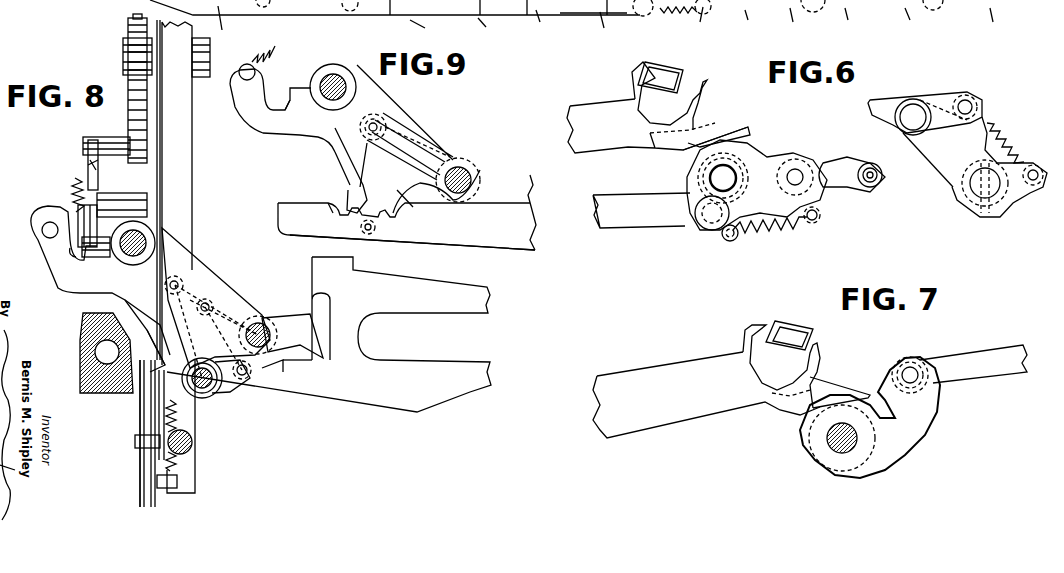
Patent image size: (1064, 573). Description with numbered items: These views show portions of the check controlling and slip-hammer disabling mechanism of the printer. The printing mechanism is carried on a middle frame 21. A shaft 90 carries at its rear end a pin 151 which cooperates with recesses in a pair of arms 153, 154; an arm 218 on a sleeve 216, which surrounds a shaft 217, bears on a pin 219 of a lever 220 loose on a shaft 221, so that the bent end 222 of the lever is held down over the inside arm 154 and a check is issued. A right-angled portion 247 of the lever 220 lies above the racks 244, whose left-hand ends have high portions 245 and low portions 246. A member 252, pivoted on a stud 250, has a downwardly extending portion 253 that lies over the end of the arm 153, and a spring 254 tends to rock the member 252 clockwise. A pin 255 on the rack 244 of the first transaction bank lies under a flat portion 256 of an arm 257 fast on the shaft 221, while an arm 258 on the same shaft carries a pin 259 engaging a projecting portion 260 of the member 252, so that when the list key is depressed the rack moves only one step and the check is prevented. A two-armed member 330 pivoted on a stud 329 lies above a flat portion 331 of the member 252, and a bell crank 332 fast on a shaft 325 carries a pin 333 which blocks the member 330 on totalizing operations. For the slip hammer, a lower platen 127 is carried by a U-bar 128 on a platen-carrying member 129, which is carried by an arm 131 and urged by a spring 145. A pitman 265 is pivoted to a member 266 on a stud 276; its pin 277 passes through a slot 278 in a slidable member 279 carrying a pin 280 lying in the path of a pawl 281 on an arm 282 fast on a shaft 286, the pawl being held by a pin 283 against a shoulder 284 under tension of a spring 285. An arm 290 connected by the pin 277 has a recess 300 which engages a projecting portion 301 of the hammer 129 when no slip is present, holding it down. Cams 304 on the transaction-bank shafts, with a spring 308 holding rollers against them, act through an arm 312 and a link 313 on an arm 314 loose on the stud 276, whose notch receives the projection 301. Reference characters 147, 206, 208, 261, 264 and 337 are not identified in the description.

In FIG. 8, the middle frame 21 is at (175, 225).
In FIG. 9, the middle frame 21 is at (405, 126).
In FIG. 8, the shaft 90 is at (190, 449).
In FIG. 6, the lower platen 127 is at (667, 78).
In FIG. 7, the lower platen 127 is at (785, 333).
In FIG. 6, the U-bar 128 is at (680, 82).
In FIG. 7, the U-bar 128 is at (803, 342).
In FIG. 6, the platen-carrying member 129 is at (668, 108).
In FIG. 7, the platen-carrying member 129 is at (787, 366).
In FIG. 6, the arm 131 is at (658, 126).
In FIG. 7, the arm 131 is at (672, 352).
In FIG. 9, the spring 145 is at (500, 28).
In FIG. 9, the member 147 is at (435, 30).
In FIG. 8, the pin 151 is at (133, 440).
In FIG. 8, the arm 153 is at (143, 460).
In FIG. 8, the arm 154 is at (160, 478).
In FIG. 8, the plate 206 is at (158, 163).
In FIG. 8, the plate 208 is at (180, 190).
In FIG. 8, the sleeve 216 is at (206, 392).
In FIG. 8, the shaft 217 is at (201, 390).
In FIG. 8, the arm 218 is at (216, 386).
In FIG. 8, the pin 219 is at (246, 375).
In FIG. 8, the lever 220 is at (286, 324).
In FIG. 8, the shaft 221 is at (256, 322).
In FIG. 9, the shaft 221 is at (475, 172).
In FIG. 8, the bent end 222 is at (148, 397).
In FIG. 8, the rack 244 is at (467, 373).
In FIG. 9, the rack 244 is at (500, 242).
In FIG. 8, the high portions 245 is at (308, 365).
In FIG. 9, the high portions 245 is at (302, 203).
In FIG. 8, the low portions 246 is at (283, 372).
In FIG. 9, the low portions 246 is at (333, 233).
In FIG. 8, the portion 247 is at (318, 330).
In FIG. 8, the stud 250 is at (130, 255).
In FIG. 9, the stud 250 is at (335, 82).
In FIG. 8, the member 252 is at (48, 265).
In FIG. 9, the member 252 is at (330, 133).
In FIG. 8, the downwardly extending portion 253 is at (120, 300).
In FIG. 9, the downwardly extending portion 253 is at (343, 172).
In FIG. 8, the spring 254 is at (72, 192).
In FIG. 9, the spring 254 is at (282, 42).
In FIG. 9, the pin 255 is at (373, 236).
In FIG. 9, the flat portion 256 is at (380, 228).
In FIG. 9, the arm 257 is at (399, 205).
In FIG. 8, the arm 258 is at (203, 300).
In FIG. 9, the arm 258 is at (404, 140).
In FIG. 8, the pin 259 is at (174, 280).
In FIG. 9, the pin 259 is at (376, 122).
In FIG. 8, the projecting portion 260 is at (207, 300).
In FIG. 9, the projecting portion 260 is at (398, 118).
In FIG. 9, the bar 261 is at (618, 26).
In FIG. 9, the shaft 264 is at (558, 22).
In FIG. 9, the pitman 265 is at (240, 23).
In FIG. 6, the pitman 265 is at (640, 218).
In FIG. 9, the member 266 is at (678, 18).
In FIG. 6, the member 266 is at (760, 228).
In FIG. 6, the stud 276 is at (715, 177).
In FIG. 7, the stud 276 is at (825, 450).
In FIG. 6, the pin 277 is at (798, 170).
In FIG. 6, the slot 278 is at (832, 175).
In FIG. 6, the member 279 is at (845, 188).
In FIG. 6, the pin 280 is at (872, 182).
In FIG. 6, the pawl 281 is at (880, 105).
In FIG. 6, the arm 282 is at (955, 150).
In FIG. 6, the pin 283 is at (972, 100).
In FIG. 6, the shoulder 284 is at (985, 117).
In FIG. 6, the spring 285 is at (1000, 137).
In FIG. 6, the shaft 286 is at (990, 197).
In FIG. 6, the arm 290 is at (765, 147).
In FIG. 6, the recess 300 is at (757, 140).
In FIG. 6, the projecting portion 301 is at (703, 133).
In FIG. 7, the projecting portion 301 is at (830, 395).
In FIG. 6, the cam 304 is at (846, 20).
In FIG. 6, the spring 308 is at (808, 20).
In FIG. 6, the arm 312 is at (1033, 5).
In FIG. 7, the link 313 is at (990, 340).
In FIG. 7, the arm 314 is at (910, 437).
In FIG. 8, the shaft 325 is at (202, 78).
In FIG. 8, the stud 329 is at (75, 215).
In FIG. 8, the two-armed member 330 is at (90, 158).
In FIG. 8, the flat portion 331 is at (80, 258).
In FIG. 9, the flat portion 331 is at (290, 86).
In FIG. 8, the bell crank 332 is at (137, 105).
In FIG. 8, the pin 333 is at (105, 146).
In FIG. 6, the pin 337 is at (1010, 20).